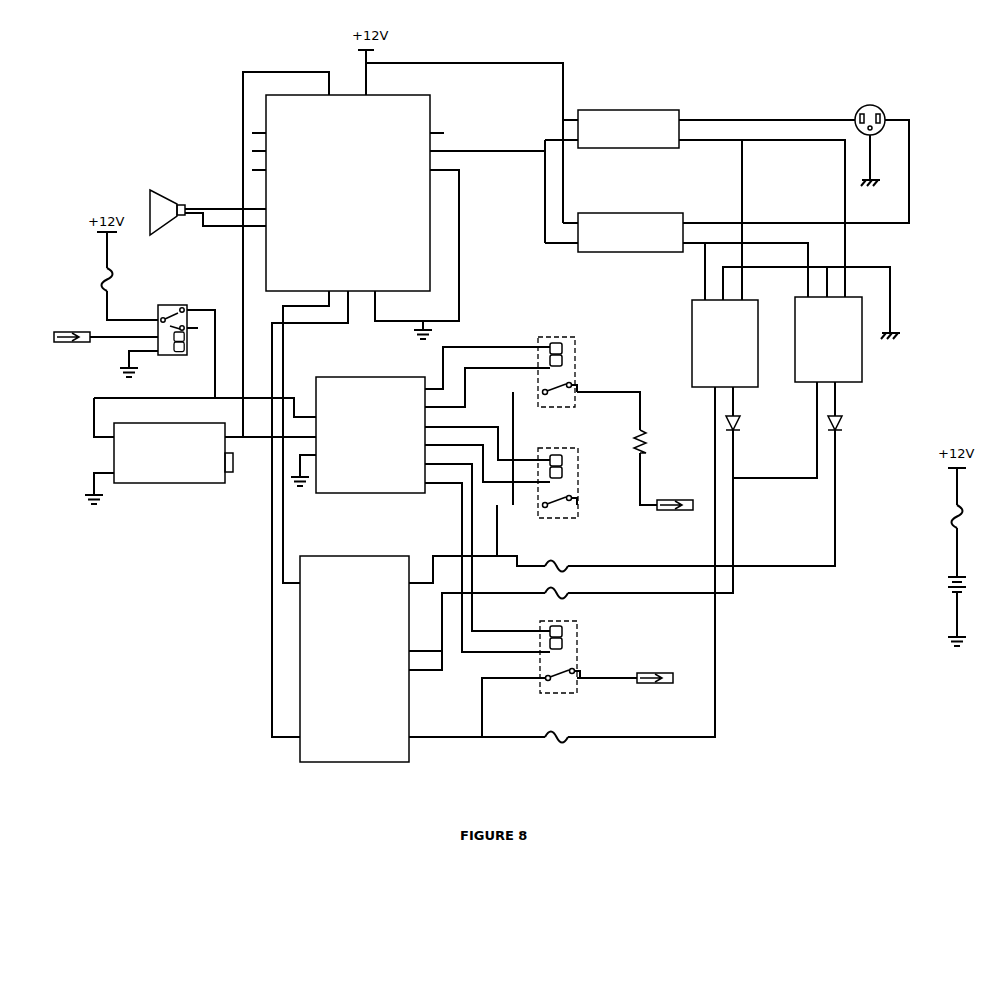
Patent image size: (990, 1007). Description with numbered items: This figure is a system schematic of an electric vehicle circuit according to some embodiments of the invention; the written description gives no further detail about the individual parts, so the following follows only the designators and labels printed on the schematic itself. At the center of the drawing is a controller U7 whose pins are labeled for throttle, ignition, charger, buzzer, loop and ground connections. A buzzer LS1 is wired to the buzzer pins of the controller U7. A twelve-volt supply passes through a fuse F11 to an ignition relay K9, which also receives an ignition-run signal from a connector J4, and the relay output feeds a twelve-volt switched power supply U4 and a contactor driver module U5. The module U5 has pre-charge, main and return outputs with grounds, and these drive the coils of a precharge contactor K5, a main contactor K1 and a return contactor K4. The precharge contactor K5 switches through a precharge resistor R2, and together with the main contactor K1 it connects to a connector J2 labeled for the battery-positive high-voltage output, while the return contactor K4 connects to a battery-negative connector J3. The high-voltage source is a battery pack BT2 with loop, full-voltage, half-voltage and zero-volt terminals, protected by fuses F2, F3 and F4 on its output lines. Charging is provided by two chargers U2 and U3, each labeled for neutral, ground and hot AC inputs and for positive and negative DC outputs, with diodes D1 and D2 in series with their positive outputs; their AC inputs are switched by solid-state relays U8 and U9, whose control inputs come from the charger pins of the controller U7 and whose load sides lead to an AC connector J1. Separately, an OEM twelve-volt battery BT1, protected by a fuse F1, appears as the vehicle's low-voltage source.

The controller U7 is at (357, 183).
The solid state relay U8 is at (628, 130).
The solid state relay U9 is at (630, 224).
The AC connector J1 is at (870, 113).
The buzzer LS1 is at (167, 203).
The fuse F11 is at (100, 282).
The ignition relay K9 is at (171, 332).
The ignition run connector J4 is at (68, 339).
The 12V switched power supply U4 is at (173, 444).
The contactor controller U5 is at (370, 426).
The precharge contactor K5 is at (551, 372).
The main contactor K1 is at (558, 483).
The precharge resistor R2 is at (632, 441).
The B+ 320V connector J2 is at (676, 506).
The charger 220VAC U2 is at (728, 347).
The charger 220VAC U3 is at (821, 339).
The diode D1 is at (742, 424).
The diode D2 is at (844, 424).
The battery pack BT2 is at (354, 660).
The fuse F2 is at (556, 558).
The fuse F3 is at (556, 586).
The fuse F4 is at (556, 729).
The return contactor K4 is at (558, 658).
The B- connector J3 is at (655, 680).
The fuse F1 is at (948, 516).
The OEM 12V battery BT1 is at (958, 584).